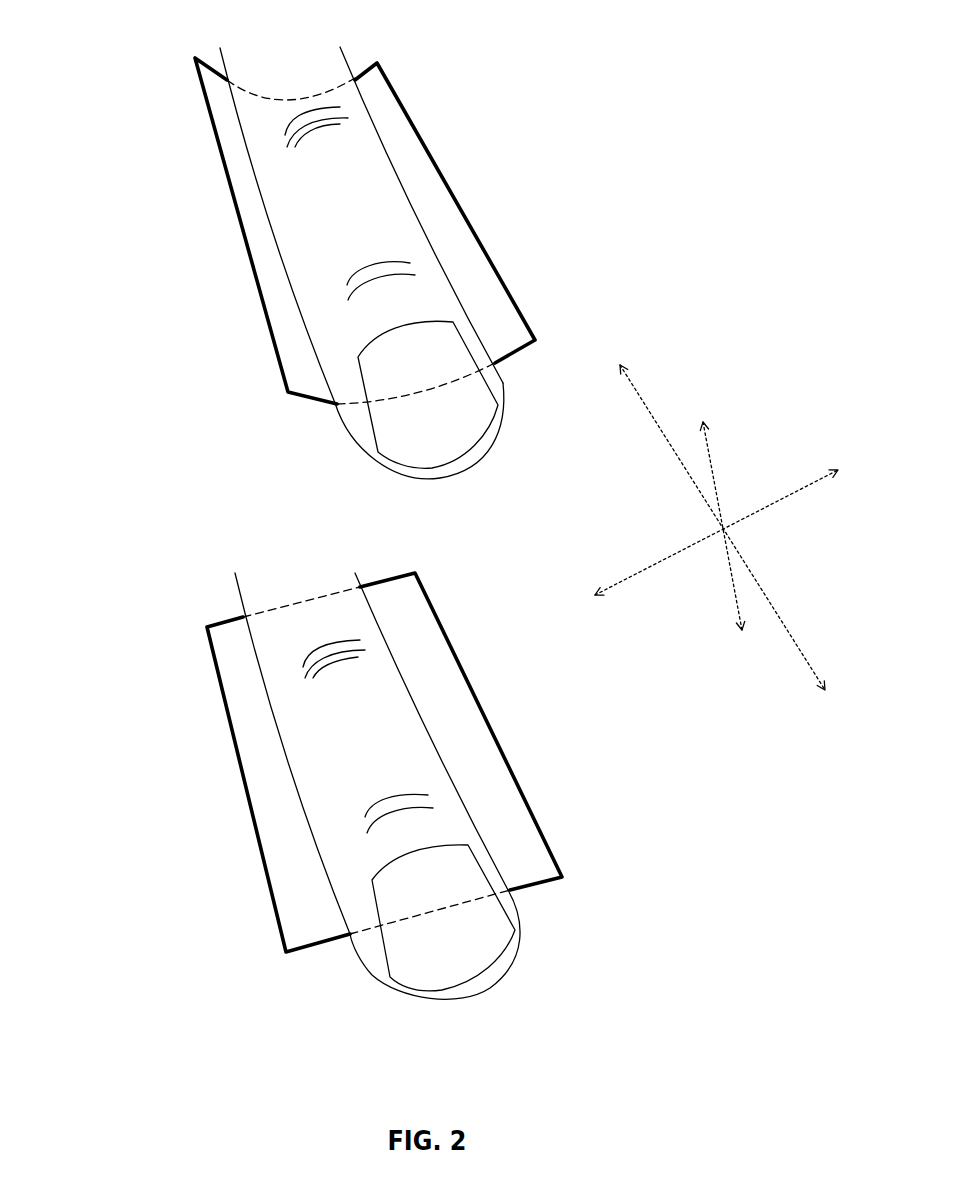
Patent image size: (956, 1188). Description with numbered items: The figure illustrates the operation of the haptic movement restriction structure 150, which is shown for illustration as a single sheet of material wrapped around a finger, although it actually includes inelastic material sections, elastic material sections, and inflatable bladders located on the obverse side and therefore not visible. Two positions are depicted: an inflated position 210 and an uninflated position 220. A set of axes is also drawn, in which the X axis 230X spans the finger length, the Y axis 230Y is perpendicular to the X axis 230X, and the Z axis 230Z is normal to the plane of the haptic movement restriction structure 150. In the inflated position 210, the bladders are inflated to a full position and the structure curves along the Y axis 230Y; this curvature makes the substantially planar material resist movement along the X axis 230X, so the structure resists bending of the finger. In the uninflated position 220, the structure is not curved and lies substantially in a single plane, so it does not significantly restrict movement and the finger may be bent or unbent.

The haptic movement restriction structure 150 is at (282, 390).
The inflated position 210 is at (112, 248).
The uninflated position 220 is at (114, 833).
The X axis 230X is at (710, 499).
The Y axis 230Y is at (687, 538).
The Z axis 230Z is at (717, 500).